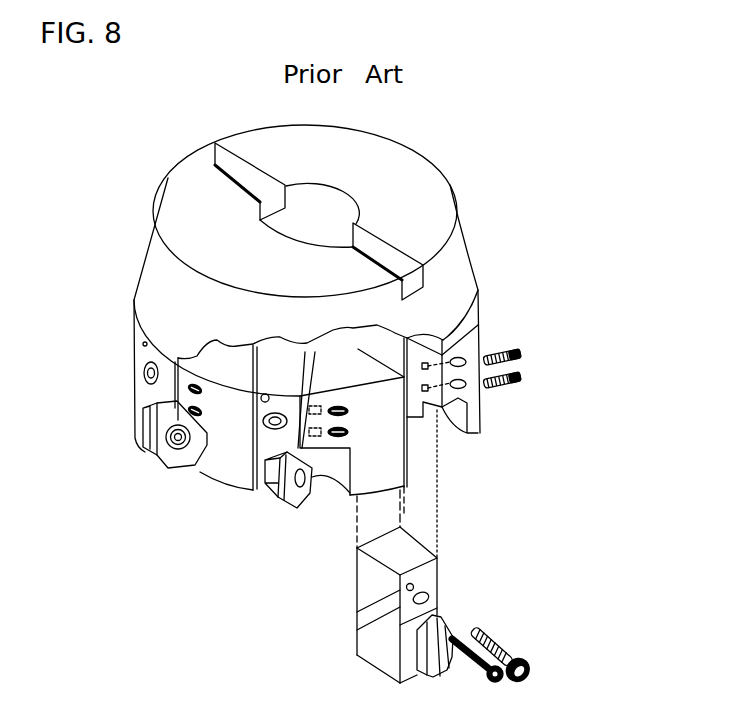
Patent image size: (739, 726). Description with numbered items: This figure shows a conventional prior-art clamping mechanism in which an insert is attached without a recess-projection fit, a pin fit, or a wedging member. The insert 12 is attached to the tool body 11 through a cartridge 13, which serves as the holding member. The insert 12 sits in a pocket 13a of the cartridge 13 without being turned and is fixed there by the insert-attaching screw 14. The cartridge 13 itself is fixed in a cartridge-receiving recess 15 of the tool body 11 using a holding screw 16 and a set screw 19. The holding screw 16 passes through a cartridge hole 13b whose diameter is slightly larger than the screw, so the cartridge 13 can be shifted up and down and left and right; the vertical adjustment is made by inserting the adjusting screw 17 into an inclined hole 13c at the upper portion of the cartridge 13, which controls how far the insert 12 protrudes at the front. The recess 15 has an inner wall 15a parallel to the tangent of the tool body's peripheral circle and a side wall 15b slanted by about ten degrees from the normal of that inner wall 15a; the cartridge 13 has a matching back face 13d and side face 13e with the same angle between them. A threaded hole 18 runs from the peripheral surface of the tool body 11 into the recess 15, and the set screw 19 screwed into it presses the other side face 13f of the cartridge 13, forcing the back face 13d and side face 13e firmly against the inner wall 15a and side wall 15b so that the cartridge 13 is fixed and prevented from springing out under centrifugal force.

The tool body 11 is at (422, 175).
The insert 12 is at (157, 460).
The cartridge 13 is at (448, 532).
The pocket 13a is at (380, 662).
The cartridge hole 13b is at (357, 630).
The inclined hole 13c is at (357, 612).
The back face 13d is at (378, 538).
The side face 13e is at (357, 587).
The other side face 13f is at (437, 584).
The insert-attaching screw 14 is at (180, 450).
The cartridge-receiving recess 15 is at (407, 338).
The inner wall 15a is at (378, 347).
The side wall 15b is at (418, 437).
The holding screw 16 is at (510, 655).
The adjusting screw 17 is at (453, 638).
The threaded hole 18 is at (468, 358).
The set screw 19 is at (520, 352).